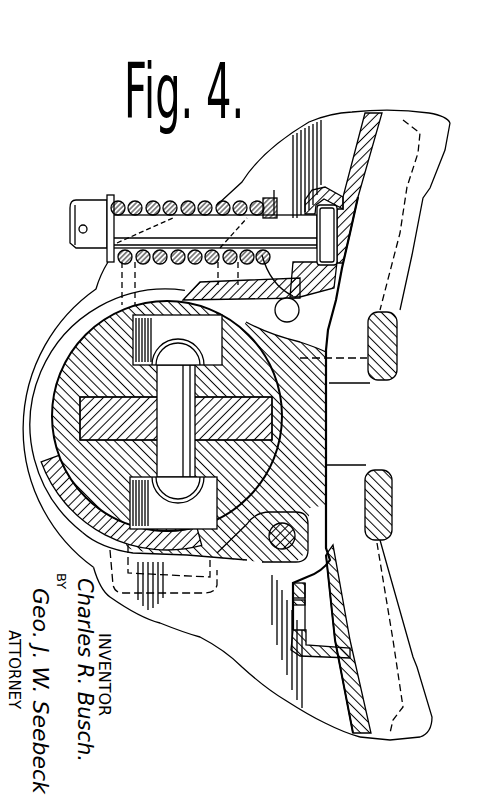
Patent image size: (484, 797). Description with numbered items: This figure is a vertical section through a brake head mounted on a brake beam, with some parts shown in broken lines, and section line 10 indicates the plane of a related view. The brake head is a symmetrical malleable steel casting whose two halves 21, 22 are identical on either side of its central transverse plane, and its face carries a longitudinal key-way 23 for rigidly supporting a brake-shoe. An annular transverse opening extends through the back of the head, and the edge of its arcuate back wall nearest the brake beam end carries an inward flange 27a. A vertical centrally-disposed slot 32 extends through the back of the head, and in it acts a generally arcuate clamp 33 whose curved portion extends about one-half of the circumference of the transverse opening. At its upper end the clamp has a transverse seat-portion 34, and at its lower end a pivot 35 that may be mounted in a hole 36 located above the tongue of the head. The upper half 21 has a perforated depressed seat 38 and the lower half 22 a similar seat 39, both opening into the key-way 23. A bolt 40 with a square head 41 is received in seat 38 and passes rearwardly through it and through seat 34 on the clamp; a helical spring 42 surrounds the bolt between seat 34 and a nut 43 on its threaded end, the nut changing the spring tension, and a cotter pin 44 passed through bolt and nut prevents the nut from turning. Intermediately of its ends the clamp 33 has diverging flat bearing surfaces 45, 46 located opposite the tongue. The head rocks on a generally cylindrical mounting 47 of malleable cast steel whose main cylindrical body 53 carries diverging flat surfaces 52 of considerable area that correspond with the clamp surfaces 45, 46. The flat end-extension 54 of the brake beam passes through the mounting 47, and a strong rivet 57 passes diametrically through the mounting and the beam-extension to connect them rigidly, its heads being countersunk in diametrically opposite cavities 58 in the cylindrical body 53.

The section line 10 is at (163, 177).
The head-half 21 is at (328, 130).
The head-half 22 is at (272, 662).
The key-way 23 is at (375, 260).
The inward flange 27a is at (90, 345).
The slot 32 is at (351, 126).
The clamp 33 is at (133, 522).
The seat-portion 34 is at (293, 150).
The pivot 35 is at (296, 546).
The hole 36 is at (300, 310).
The perforated depressed seat 38 is at (320, 192).
The seat 39 is at (311, 658).
The bolt 40 is at (306, 230).
The square head 41 is at (327, 243).
The helical spring 42 is at (147, 185).
The nut 43 is at (97, 185).
The cotter pin 44 is at (79, 230).
The flat bearing surface 45 is at (100, 357).
The flat bearing surface 46 is at (77, 485).
The mounting 47 is at (274, 393).
The flat surfaces 52 is at (82, 383).
The cylindrical body 53 is at (252, 343).
The end-extension 54 is at (322, 428).
The rivet 57 is at (177, 340).
The cavities 58 is at (163, 320).